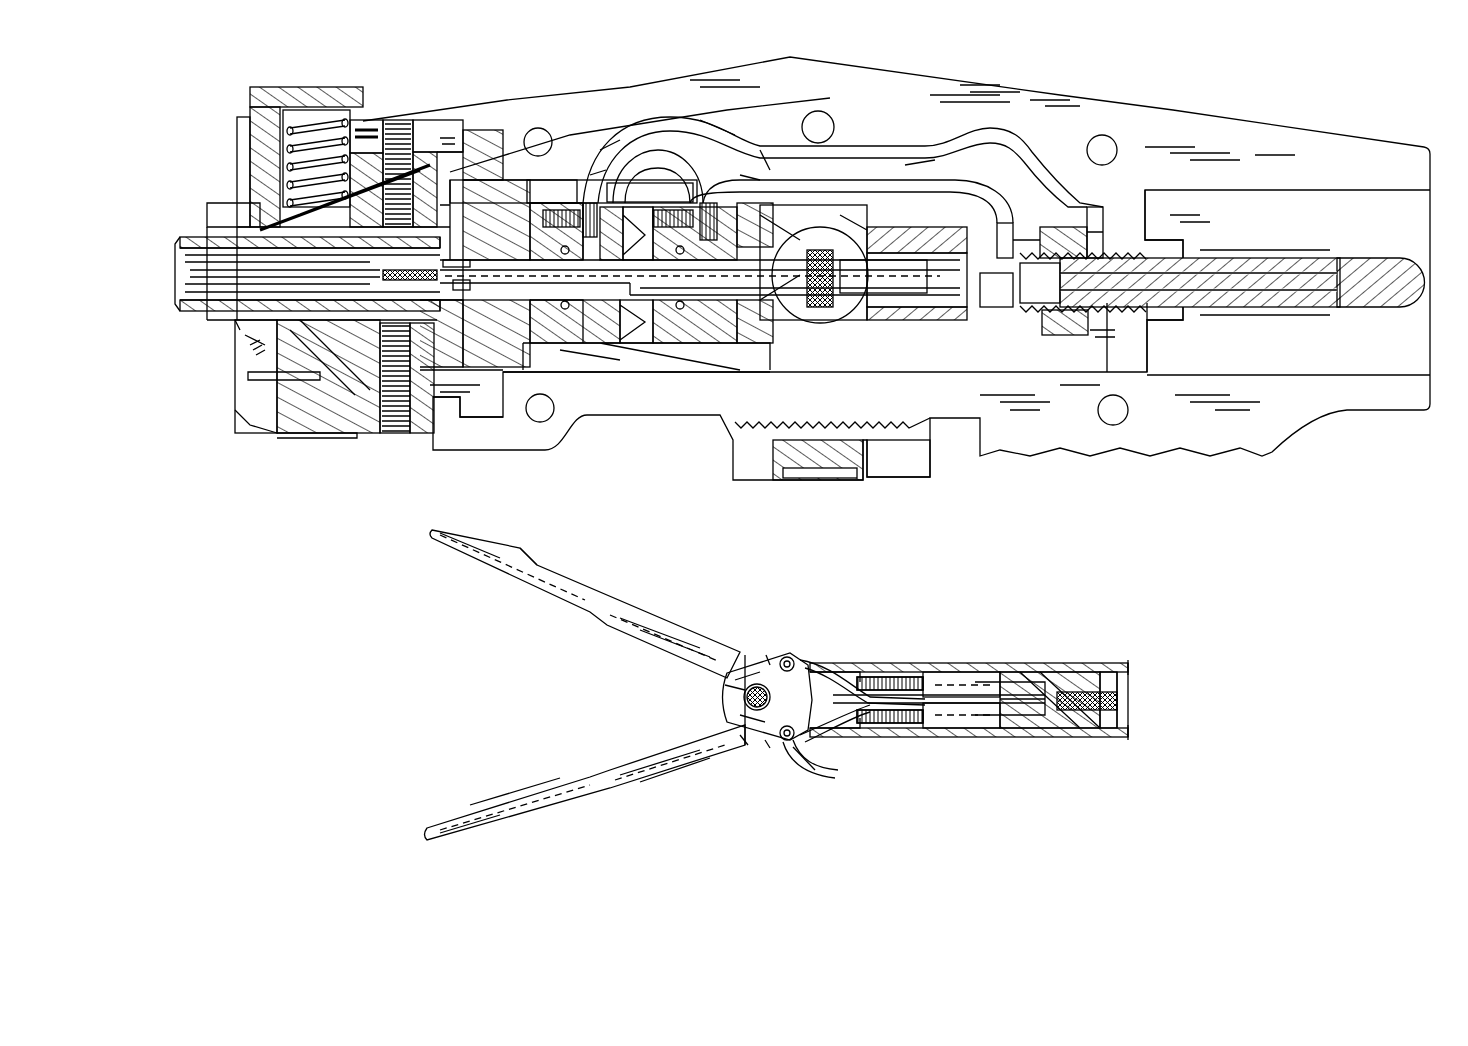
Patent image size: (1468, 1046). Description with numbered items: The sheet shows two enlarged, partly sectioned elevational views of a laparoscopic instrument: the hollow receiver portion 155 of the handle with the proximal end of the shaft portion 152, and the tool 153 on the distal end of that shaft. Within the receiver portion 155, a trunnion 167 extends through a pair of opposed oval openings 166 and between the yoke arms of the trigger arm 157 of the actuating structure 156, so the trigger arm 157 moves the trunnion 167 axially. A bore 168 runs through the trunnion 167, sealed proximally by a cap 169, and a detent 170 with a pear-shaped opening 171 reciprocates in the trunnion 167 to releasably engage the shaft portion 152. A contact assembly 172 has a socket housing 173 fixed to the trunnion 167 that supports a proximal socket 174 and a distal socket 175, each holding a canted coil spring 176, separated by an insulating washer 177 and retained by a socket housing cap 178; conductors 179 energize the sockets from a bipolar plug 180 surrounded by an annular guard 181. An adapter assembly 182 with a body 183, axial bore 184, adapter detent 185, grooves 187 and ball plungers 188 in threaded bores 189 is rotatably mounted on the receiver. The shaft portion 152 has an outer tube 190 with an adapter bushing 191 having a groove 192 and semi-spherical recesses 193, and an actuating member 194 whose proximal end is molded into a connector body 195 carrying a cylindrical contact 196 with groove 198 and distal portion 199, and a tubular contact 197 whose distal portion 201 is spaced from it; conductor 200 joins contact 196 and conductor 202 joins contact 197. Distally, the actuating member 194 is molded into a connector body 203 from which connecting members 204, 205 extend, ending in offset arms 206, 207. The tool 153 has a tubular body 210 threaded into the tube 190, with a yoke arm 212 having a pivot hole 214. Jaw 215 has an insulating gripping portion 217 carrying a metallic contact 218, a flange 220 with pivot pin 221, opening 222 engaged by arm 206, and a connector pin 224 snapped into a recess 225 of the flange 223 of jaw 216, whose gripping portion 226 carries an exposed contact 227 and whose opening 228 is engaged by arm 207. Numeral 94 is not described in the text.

In FIG. 9, the shaft 94 is at (215, 370).
In FIG. 9, the shaft portion 152 is at (227, 417).
In FIG. 10, the shaft portion 152 is at (1063, 753).
In FIG. 10, the tool 153 is at (677, 790).
In FIG. 9, the receiver portion 155 is at (1155, 102).
In FIG. 9, the actuating structure 156 is at (897, 467).
In FIG. 9, the trigger arm 157 is at (740, 460).
In FIG. 9, the oval openings 166 is at (843, 247).
In FIG. 9, the trunnion 167 is at (832, 190).
In FIG. 9, the bore 168 is at (713, 137).
In FIG. 9, the cap 169 is at (930, 163).
In FIG. 9, the detent 170 is at (838, 225).
In FIG. 9, the pear-shaped opening 171 is at (752, 195).
In FIG. 9, the contact assembly 172 is at (617, 193).
In FIG. 9, the socket housing 173 is at (598, 170).
In FIG. 9, the proximal socket 174 is at (648, 345).
In FIG. 9, the distal socket 175 is at (630, 370).
In FIG. 9, the canted coil spring 176 is at (637, 200).
In FIG. 9, the electrically insulating washer 177 is at (653, 343).
In FIG. 9, the socket housing cap 178 is at (500, 173).
In FIG. 9, the conductors 179 is at (1023, 180).
In FIG. 9, the bipolar plug 180 is at (1377, 260).
In FIG. 9, the annular guard 181 is at (1250, 152).
In FIG. 9, the adapter assembly 182 is at (280, 78).
In FIG. 9, the body 183 is at (297, 427).
In FIG. 9, the axial bore 184 is at (290, 325).
In FIG. 9, the adapter detent 185 is at (262, 433).
In FIG. 9, the axially-extending grooves 187 is at (323, 440).
In FIG. 9, the ball plungers 188 is at (400, 120).
In FIG. 9, the threaded bore 189 is at (450, 125).
In FIG. 9, the outer tube 190 is at (225, 237).
In FIG. 10, the outer tube 190 is at (1040, 663).
In FIG. 9, the adapter bushing 191 is at (250, 122).
In FIG. 9, the circumferential groove 192 is at (283, 150).
In FIG. 9, the semi-spherical recesses 193 is at (390, 140).
In FIG. 10, the actuating member 194 is at (1120, 702).
In FIG. 9, the connector body 195 is at (497, 117).
In FIG. 9, the electrical contact 196 is at (668, 345).
In FIG. 9, the electrical contact 197 is at (625, 318).
In FIG. 9, the circumferential groove 198 is at (827, 300).
In FIG. 9, the distal portion 199 is at (547, 160).
In FIG. 9, the electrical conductor 200 is at (466, 285).
In FIG. 10, the electrical conductor 200 is at (977, 680).
In FIG. 9, the distal portion 201 is at (563, 250).
In FIG. 9, the electrical conductor 202 is at (248, 252).
In FIG. 10, the electrical conductor 202 is at (978, 747).
In FIG. 10, the connector body 203 is at (1073, 727).
In FIG. 10, the connecting member 204 is at (912, 672).
In FIG. 10, the connecting member 205 is at (873, 727).
In FIG. 10, the arm 206 is at (797, 652).
In FIG. 10, the arm 207 is at (803, 757).
In FIG. 10, the tubular body 210 is at (920, 737).
In FIG. 10, the yoke arm 212 is at (767, 747).
In FIG. 10, the pivot hole 214 is at (743, 740).
In FIG. 10, the jaw 215 is at (567, 810).
In FIG. 10, the jaw 216 is at (583, 583).
In FIG. 10, the gripping portion 217 is at (513, 827).
In FIG. 10, the metallic contact 218 is at (493, 807).
In FIG. 10, the flange 220 is at (787, 657).
In FIG. 10, the pivot pin 221 is at (745, 703).
In FIG. 10, the opening 222 is at (820, 672).
In FIG. 10, the flange 223 is at (810, 760).
In FIG. 10, the connector pin 224 is at (763, 653).
In FIG. 10, the recess 225 is at (723, 687).
In FIG. 10, the gripping portion 226 is at (537, 563).
In FIG. 10, the exposed contact 227 is at (513, 577).
In FIG. 10, the opening 228 is at (810, 770).